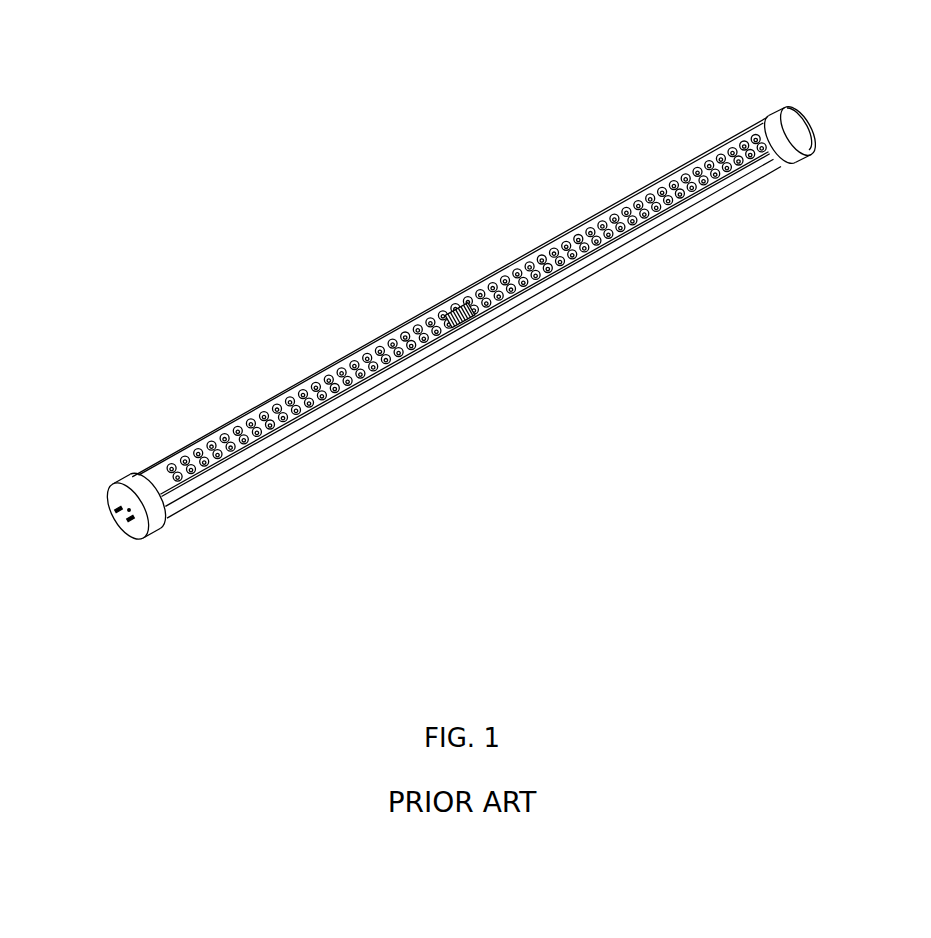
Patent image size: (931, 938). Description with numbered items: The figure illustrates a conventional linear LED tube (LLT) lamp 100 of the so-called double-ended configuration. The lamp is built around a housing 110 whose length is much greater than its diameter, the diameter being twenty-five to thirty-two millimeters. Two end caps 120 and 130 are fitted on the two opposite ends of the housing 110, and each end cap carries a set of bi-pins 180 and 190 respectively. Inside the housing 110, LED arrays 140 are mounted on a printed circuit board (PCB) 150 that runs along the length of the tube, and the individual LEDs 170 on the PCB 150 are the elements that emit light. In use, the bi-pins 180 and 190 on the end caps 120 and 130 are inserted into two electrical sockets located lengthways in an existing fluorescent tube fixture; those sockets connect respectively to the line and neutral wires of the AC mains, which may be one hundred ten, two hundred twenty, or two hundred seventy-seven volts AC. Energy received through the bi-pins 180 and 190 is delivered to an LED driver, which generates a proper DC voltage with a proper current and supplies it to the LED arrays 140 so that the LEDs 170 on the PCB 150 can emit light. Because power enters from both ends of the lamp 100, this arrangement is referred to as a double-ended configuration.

The LLT lamp 100 is at (498, 251).
The housing 110 is at (485, 327).
The end cap 120 is at (126, 482).
The end cap 130 is at (803, 154).
The LED arrays 140 is at (288, 395).
The printed circuit board (PCB) 150 is at (446, 312).
The LEDs 170 is at (186, 456).
The bi-pins 180 is at (137, 520).
The bi-pins 190 is at (800, 109).